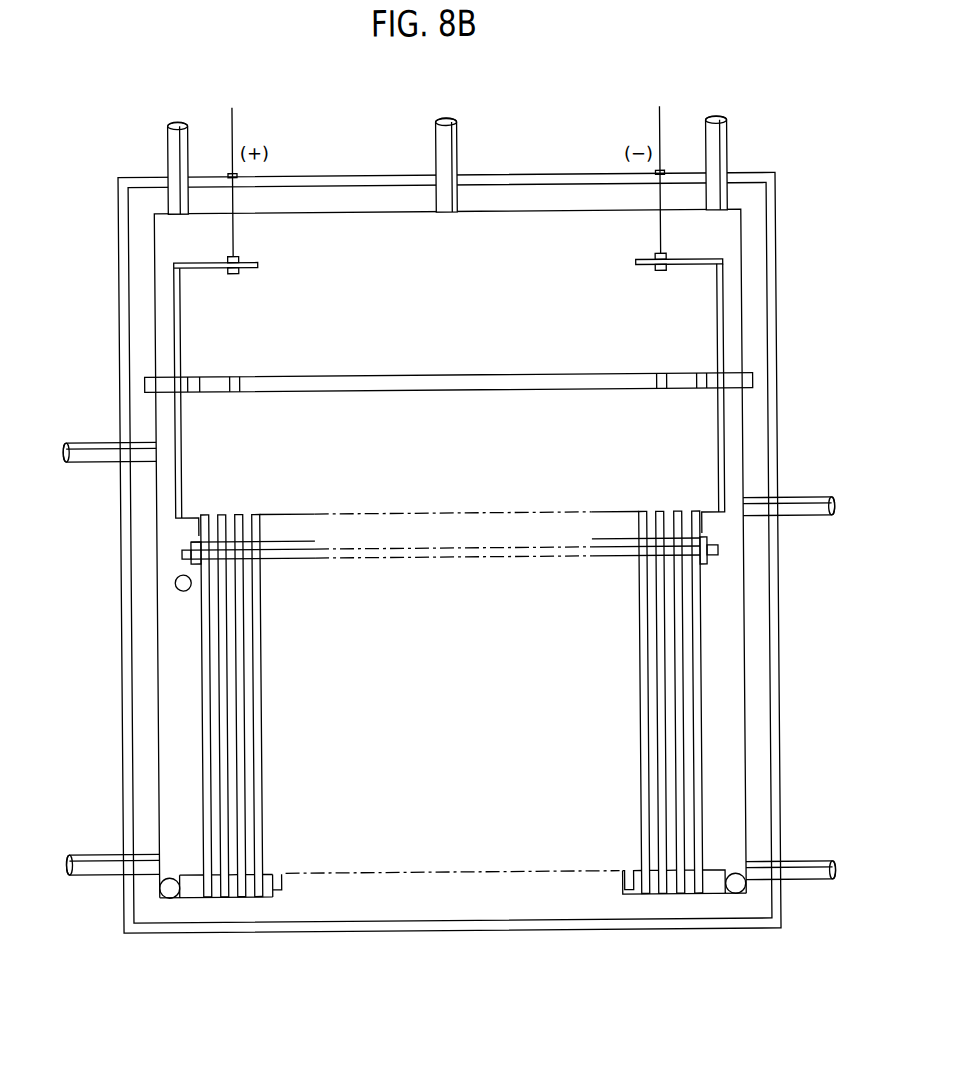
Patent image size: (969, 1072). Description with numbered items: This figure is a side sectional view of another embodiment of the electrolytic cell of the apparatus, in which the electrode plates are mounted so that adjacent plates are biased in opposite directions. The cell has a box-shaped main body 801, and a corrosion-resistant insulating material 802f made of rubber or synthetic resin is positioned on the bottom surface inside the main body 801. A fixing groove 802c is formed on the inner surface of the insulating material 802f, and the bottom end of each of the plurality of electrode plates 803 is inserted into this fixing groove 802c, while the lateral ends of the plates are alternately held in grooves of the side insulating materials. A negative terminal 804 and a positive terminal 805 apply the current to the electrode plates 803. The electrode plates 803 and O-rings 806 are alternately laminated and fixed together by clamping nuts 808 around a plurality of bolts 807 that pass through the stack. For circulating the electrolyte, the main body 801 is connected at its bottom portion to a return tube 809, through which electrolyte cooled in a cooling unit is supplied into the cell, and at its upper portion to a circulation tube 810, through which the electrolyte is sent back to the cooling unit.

The main body 801 is at (778, 772).
The fixing groove 802c is at (282, 889).
The insulating material 802f is at (449, 907).
The electrode plates 803 is at (262, 773).
The negative terminal 804 is at (719, 470).
The positive terminal 805 is at (176, 320).
The O-ring 806 is at (650, 541).
The bolts 807 is at (285, 551).
The nuts 808 is at (705, 562).
The return tube 809 is at (739, 895).
The circulation tube 810 is at (175, 578).